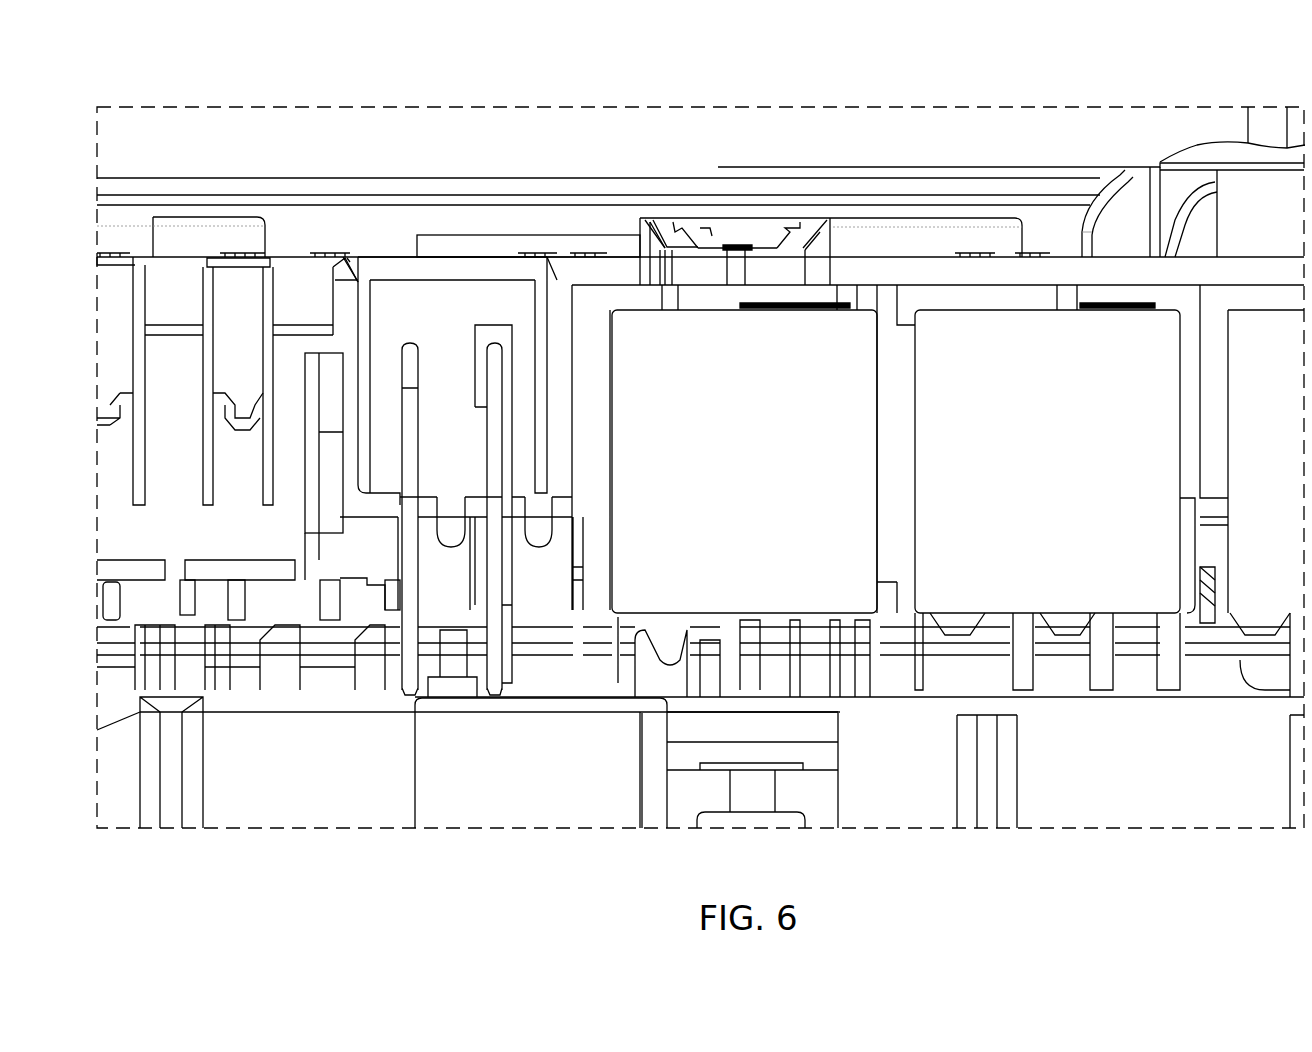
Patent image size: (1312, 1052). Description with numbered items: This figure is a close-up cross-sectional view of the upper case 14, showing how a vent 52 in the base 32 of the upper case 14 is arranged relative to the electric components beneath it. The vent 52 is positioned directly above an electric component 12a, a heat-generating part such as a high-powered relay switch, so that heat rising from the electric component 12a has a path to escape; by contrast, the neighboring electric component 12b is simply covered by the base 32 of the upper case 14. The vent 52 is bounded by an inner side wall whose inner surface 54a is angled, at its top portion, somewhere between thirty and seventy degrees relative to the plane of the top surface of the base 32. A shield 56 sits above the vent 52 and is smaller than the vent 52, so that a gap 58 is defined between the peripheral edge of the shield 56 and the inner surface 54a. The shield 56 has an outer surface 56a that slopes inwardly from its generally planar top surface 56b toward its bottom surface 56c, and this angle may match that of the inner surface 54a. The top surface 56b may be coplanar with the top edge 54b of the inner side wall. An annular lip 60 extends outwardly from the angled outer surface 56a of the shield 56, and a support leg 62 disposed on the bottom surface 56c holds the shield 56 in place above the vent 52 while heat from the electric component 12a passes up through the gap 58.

The electric component 12a is at (712, 474).
The electric component 12b is at (1023, 474).
The upper case 14 is at (1231, 74).
The base 32 is at (942, 260).
The vent 52 is at (771, 206).
The inner surface 54a is at (663, 237).
The top edge 54b is at (648, 238).
The shield 56 is at (737, 235).
The outer surface 56a is at (713, 237).
The top surface 56b is at (705, 222).
The bottom surface 56c is at (760, 250).
The gap 58 is at (810, 238).
The annular lip 60 is at (667, 252).
The support leg 62 is at (732, 262).